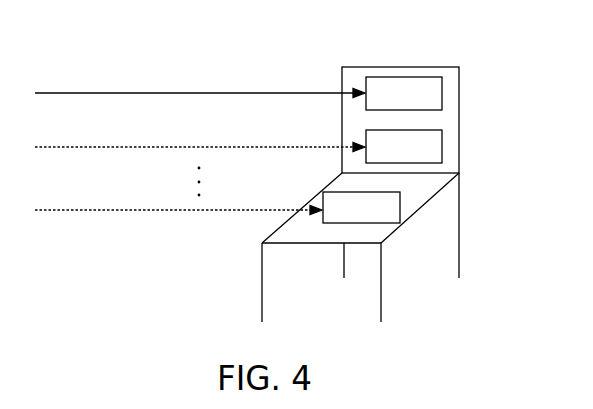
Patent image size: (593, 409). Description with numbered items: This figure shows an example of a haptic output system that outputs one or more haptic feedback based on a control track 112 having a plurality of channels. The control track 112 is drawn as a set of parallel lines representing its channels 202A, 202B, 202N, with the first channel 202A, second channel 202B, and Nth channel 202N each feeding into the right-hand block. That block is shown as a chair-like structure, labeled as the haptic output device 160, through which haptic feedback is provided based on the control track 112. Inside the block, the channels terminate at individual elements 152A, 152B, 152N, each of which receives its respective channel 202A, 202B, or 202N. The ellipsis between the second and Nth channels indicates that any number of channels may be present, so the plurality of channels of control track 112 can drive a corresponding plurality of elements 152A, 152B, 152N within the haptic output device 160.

The control track 112 is at (53, 75).
The haptic output device 160 is at (477, 87).
The channel 202A is at (260, 93).
The channel 202B is at (260, 147).
The channel 202N is at (258, 210).
The first module 152A is at (430, 102).
The second module 152B is at (430, 157).
The Nth module 152N is at (389, 219).